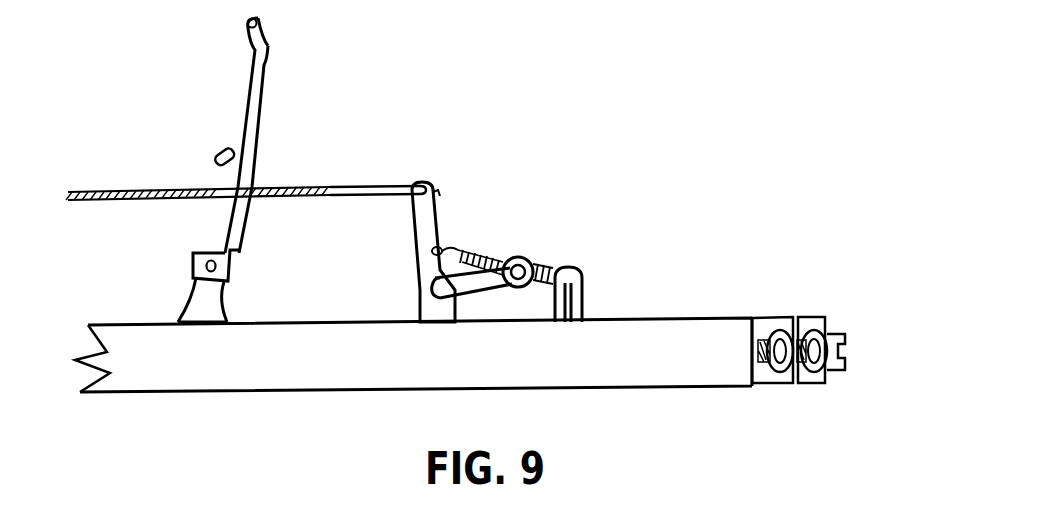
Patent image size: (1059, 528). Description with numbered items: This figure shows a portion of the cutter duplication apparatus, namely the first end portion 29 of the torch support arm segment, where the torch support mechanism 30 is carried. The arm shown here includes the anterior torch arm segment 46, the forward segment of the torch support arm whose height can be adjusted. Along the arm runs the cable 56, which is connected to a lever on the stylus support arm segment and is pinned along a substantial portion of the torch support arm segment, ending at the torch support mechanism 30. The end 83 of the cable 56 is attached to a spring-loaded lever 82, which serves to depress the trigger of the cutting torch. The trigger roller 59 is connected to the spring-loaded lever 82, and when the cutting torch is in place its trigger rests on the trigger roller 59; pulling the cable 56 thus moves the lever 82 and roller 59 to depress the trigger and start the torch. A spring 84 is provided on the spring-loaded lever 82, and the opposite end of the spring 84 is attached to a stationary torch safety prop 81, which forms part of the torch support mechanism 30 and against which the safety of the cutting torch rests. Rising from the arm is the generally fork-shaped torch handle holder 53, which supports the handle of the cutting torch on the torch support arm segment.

The first end portion of the torch support arm segment 29 is at (288, 367).
The torch support mechanism 30 is at (601, 197).
The anterior torch arm segment 46 is at (657, 283).
The torch handle holder 53 is at (258, 88).
The cable 56 is at (134, 190).
The trigger roller 59 is at (534, 268).
The torch safety prop 81 is at (580, 286).
The spring-loaded lever 82 is at (424, 218).
The end of the cable 83 is at (365, 186).
The spring 84 is at (494, 262).